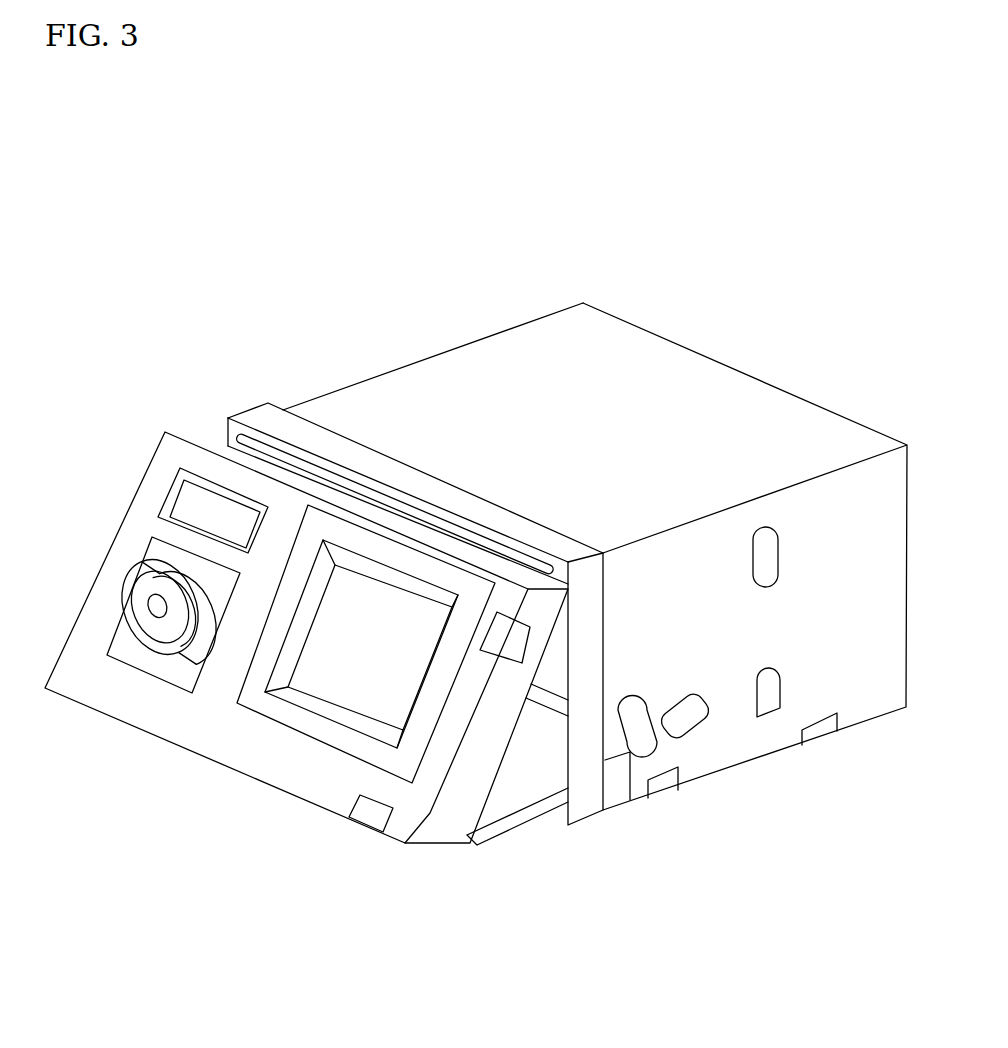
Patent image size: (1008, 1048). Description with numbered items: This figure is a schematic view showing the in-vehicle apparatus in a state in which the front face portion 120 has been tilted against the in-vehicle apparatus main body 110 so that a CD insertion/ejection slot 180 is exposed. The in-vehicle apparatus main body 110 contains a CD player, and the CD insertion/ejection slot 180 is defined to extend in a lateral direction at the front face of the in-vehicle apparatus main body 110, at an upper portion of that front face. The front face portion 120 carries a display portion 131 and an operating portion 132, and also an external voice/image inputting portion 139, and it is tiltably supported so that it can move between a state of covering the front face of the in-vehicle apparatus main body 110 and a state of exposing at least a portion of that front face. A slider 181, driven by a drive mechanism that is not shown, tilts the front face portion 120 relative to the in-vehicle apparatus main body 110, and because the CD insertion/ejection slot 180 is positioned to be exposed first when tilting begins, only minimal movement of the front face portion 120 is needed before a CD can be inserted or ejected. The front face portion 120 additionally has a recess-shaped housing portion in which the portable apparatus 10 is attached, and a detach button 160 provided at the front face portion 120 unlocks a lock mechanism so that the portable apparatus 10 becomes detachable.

The portable apparatus 10 is at (285, 717).
The in-vehicle apparatus main body 110 is at (605, 377).
The front face portion 120 is at (227, 452).
The display portion 131 is at (172, 493).
The operating portion 132 is at (112, 592).
The external voice/image inputting portion 139 is at (368, 812).
The detach button 160 is at (520, 633).
The CD insertion/ejection slot 180 is at (300, 458).
The slider 181 is at (547, 703).